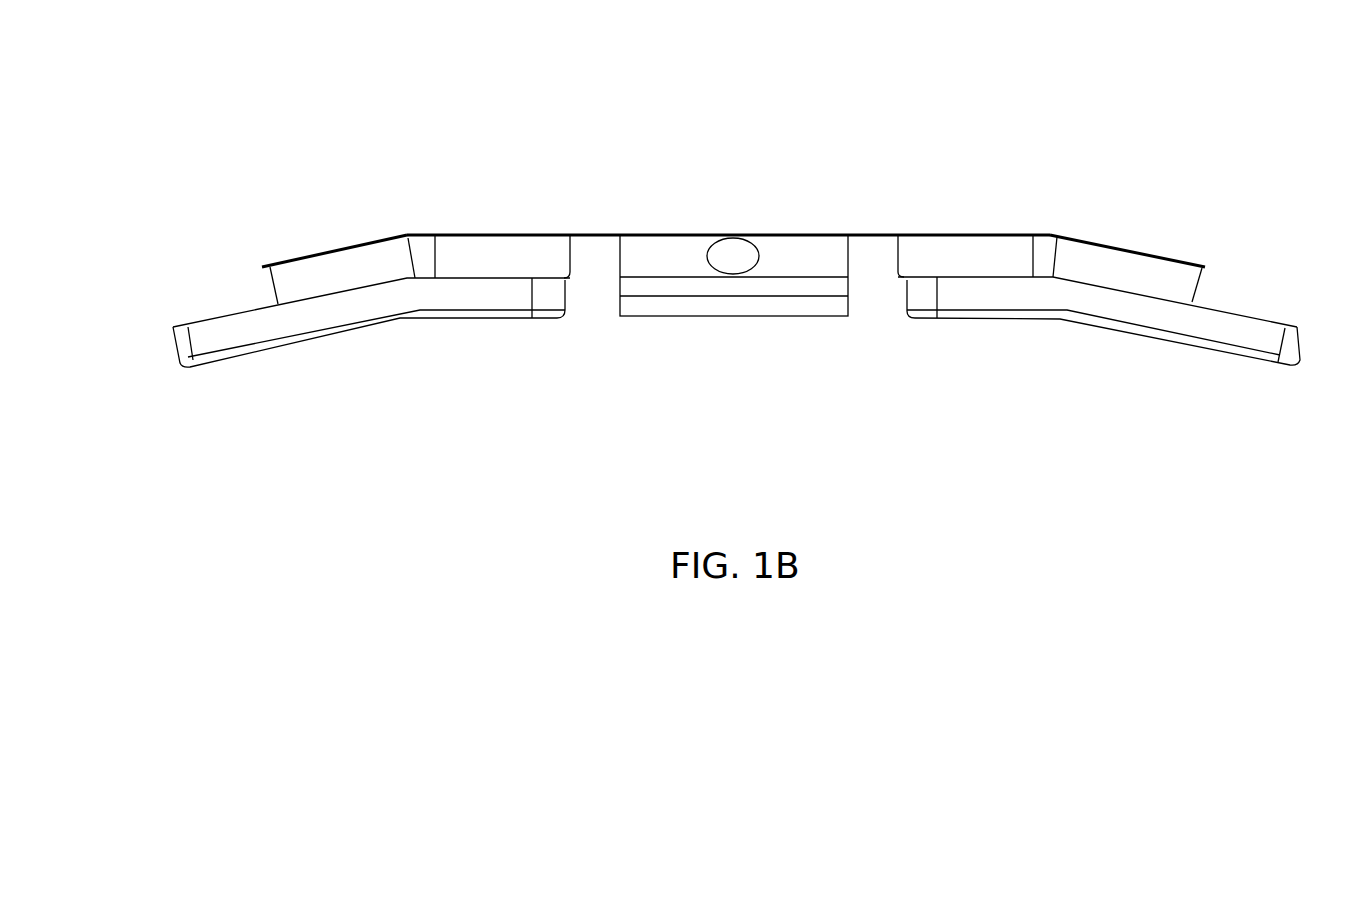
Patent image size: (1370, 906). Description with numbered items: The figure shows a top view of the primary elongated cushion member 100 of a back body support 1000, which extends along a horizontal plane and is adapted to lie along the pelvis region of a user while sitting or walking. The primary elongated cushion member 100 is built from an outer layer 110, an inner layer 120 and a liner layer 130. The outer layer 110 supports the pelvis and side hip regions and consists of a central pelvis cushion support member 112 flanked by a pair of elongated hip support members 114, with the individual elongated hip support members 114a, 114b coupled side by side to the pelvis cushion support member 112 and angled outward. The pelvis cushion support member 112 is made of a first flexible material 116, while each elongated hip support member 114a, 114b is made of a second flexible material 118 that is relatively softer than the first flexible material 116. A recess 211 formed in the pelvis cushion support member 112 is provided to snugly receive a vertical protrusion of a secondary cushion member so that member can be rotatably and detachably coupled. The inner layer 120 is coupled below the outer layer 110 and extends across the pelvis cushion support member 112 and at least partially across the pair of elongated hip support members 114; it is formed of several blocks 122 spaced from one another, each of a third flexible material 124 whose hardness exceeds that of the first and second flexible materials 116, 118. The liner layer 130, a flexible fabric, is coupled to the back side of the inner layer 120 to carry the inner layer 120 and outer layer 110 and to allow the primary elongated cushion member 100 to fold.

The back body support 1000 is at (1126, 79).
The primary elongated cushion member 100 is at (1129, 194).
The outer layer 110 is at (1288, 378).
The pelvis cushion support member 112 is at (657, 317).
The pair of elongated hip support members 114 is at (164, 335).
The elongated hip support member 114a is at (223, 358).
The elongated hip support member 114b is at (972, 320).
The first flexible material 116 is at (1182, 328).
The second flexible material 118 is at (472, 304).
The inner layer 120 is at (1206, 288).
The blocks 122 is at (284, 282).
The third flexible material 124 is at (373, 260).
The liner layer 130 is at (863, 233).
The recess 211 is at (732, 250).